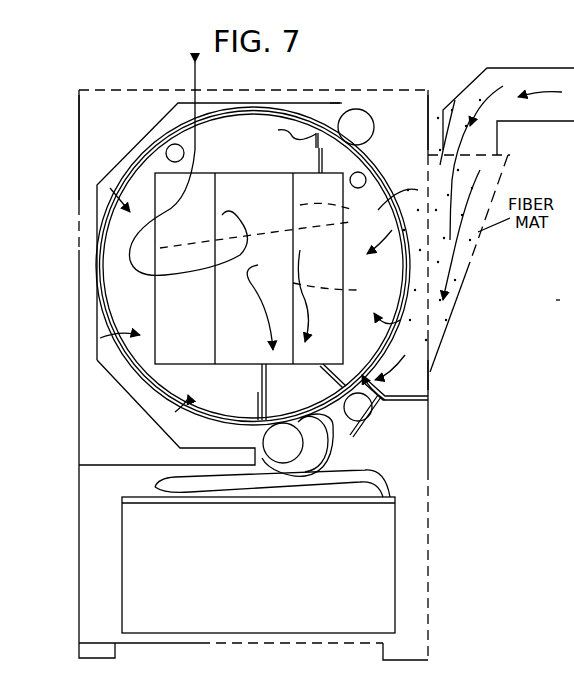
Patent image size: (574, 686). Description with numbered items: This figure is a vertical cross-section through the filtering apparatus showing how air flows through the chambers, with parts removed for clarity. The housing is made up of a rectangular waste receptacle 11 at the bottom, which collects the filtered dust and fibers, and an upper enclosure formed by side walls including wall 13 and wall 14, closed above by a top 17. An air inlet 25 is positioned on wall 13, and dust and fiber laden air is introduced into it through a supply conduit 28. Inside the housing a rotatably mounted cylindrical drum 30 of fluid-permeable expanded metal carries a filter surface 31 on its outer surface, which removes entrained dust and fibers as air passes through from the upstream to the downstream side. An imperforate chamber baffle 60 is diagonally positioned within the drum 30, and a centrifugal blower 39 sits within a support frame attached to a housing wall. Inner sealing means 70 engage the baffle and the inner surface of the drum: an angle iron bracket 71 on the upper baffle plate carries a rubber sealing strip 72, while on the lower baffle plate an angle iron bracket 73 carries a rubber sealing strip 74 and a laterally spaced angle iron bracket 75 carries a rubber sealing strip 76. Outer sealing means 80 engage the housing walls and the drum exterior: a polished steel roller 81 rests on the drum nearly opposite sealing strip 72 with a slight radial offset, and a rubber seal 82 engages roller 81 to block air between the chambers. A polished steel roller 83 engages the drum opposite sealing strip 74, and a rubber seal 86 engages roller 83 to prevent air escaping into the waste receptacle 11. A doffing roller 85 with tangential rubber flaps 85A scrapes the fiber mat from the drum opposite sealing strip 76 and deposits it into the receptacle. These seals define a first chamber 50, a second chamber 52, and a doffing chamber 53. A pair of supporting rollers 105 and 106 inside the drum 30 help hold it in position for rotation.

The waste receptacle 11 is at (412, 583).
The side wall 13 is at (428, 386).
The side wall 14 is at (79, 150).
The top 17 is at (115, 90).
The air inlet 25 is at (462, 293).
The supply conduit 28 is at (493, 75).
The cylindrical drum 30 is at (100, 246).
The filter surface 31 is at (98, 312).
The centrifugal blower 39 is at (565, 299).
The first chamber 50 is at (392, 297).
The second chamber 52 is at (142, 314).
The doffing chamber 53 is at (310, 399).
The chamber baffle 60 is at (257, 319).
The inner sealing means 70 is at (243, 206).
The angle iron bracket 71 is at (312, 160).
The rubber sealing strip 72 is at (284, 134).
The angle iron bracket 73 is at (262, 372).
The rubber sealing strip 74 is at (258, 406).
The angle iron bracket 75 is at (333, 353).
The rubber sealing strip 76 is at (428, 393).
The outer sealing means 80 is at (386, 117).
The polished steel roller 81 is at (366, 137).
The rubber seal 82 is at (340, 102).
The polished steel roller 83 is at (296, 453).
The doffing roller 85 is at (358, 407).
The rubber flaps 85A is at (382, 412).
The rubber seal 86 is at (265, 470).
The supporting roller 105 is at (185, 150).
The supporting roller 106 is at (351, 181).